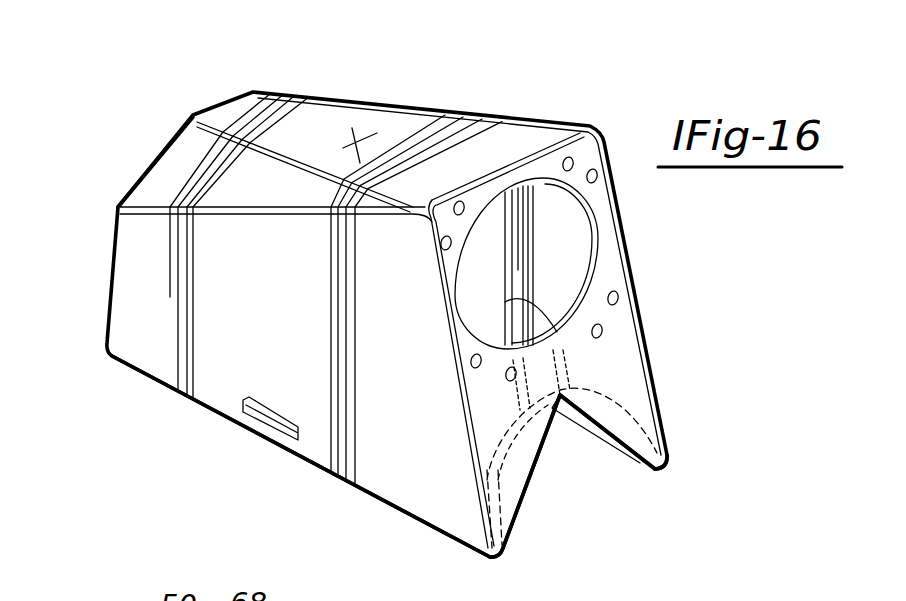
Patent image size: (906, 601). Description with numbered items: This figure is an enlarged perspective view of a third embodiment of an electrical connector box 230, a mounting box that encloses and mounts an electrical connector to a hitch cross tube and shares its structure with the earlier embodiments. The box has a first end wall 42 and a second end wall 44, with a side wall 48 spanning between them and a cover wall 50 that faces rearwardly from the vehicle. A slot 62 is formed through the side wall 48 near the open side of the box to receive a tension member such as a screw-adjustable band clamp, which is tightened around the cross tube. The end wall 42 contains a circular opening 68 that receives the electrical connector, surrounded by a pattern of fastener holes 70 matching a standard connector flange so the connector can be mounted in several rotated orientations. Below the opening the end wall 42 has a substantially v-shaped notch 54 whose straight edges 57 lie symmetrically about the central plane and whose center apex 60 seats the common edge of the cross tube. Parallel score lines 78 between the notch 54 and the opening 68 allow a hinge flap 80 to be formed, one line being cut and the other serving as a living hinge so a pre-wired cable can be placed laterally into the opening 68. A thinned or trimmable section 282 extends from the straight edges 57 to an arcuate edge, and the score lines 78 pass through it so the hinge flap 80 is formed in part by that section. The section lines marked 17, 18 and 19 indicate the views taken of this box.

The electrical connector box 230 is at (357, 87).
The cover wall 50 is at (410, 128).
The side wall 48 is at (207, 357).
The second end wall 44 is at (107, 318).
The slot 62 is at (270, 413).
The first end wall 42 is at (640, 340).
The circular opening 68 is at (578, 258).
The fastener holes 70 is at (447, 246).
The score lines 78 is at (515, 297).
The hinge flap 80 is at (537, 385).
The center apex 60 is at (555, 410).
The straight edges 57 is at (598, 442).
The trimmable section 282 is at (633, 465).
The notch 54 is at (514, 548).
The section line 17- 17 is at (503, 80).
The section line 18- 18 is at (95, 120).
The section line 19- 19 is at (278, 88).